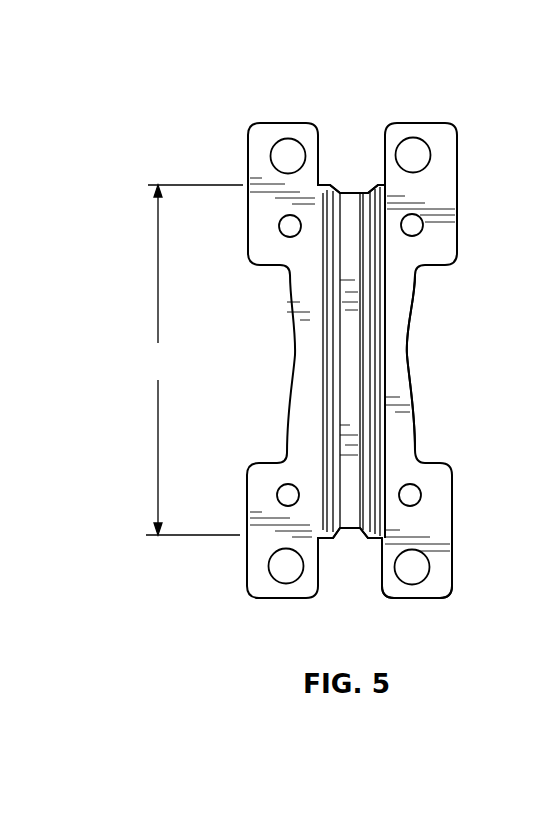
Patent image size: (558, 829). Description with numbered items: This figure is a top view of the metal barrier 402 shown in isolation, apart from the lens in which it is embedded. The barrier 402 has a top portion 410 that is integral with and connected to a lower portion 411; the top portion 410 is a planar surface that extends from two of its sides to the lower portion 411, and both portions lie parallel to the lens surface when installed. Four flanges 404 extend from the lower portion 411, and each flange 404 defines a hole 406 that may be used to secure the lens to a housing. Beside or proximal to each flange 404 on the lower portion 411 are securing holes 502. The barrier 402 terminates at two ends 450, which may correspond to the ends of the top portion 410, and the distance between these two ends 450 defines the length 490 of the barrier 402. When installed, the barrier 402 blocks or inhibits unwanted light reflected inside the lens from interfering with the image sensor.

The barrier 402 is at (258, 352).
The flange 404 is at (440, 587).
The hole 406 is at (415, 567).
The top portion 410 is at (352, 353).
The lower portion 411 is at (397, 307).
The end 450 is at (347, 192).
The length 490 is at (190, 360).
The securing hole 502 is at (413, 494).